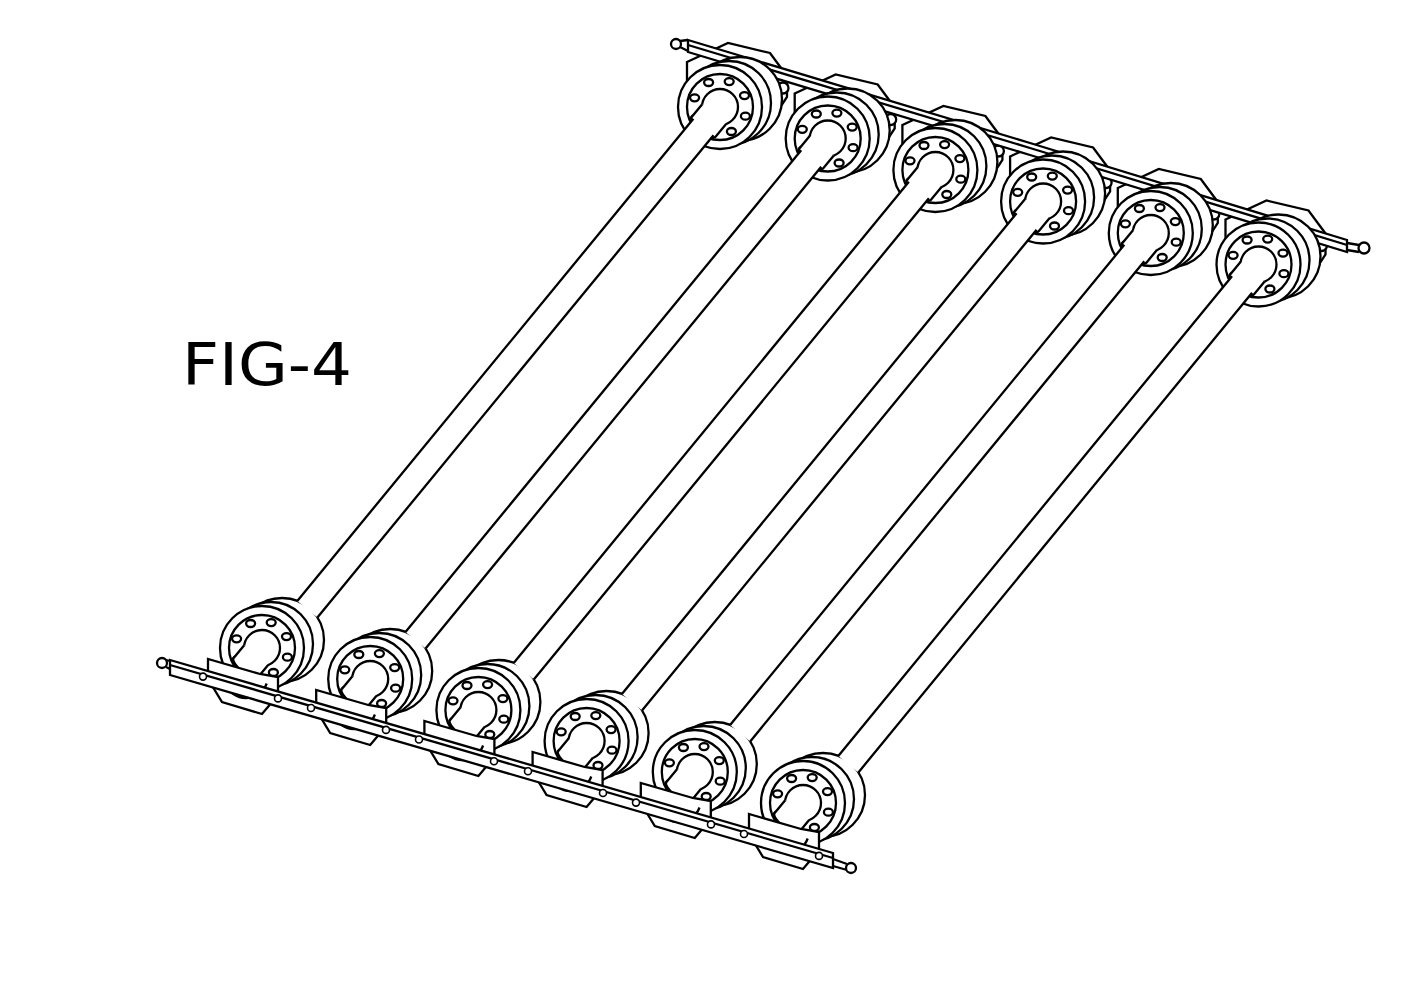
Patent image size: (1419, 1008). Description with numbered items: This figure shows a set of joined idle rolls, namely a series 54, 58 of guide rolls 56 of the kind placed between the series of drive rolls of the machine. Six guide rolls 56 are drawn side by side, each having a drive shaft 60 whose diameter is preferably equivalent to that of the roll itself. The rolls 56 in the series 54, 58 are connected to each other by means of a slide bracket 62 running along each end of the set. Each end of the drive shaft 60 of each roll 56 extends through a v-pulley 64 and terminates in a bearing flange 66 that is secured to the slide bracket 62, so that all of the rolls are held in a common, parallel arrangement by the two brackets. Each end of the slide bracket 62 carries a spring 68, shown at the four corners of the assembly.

The series of guide rolls 54 is at (788, 483).
The series of guide rolls 58 is at (788, 483).
The guide roll 56 is at (774, 446).
The drive shaft 60 is at (948, 645).
The slide bracket 62 is at (758, 484).
The v-pulley 64 is at (779, 451).
The bearing flange 66 is at (777, 472).
The spring 68 is at (670, 47).